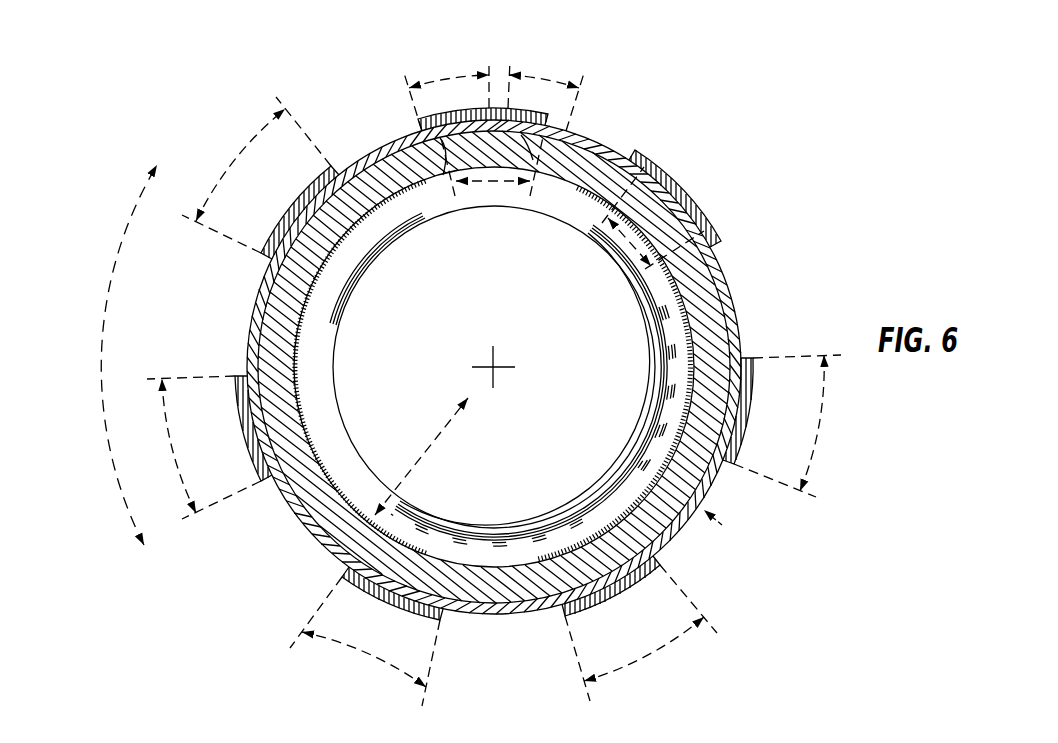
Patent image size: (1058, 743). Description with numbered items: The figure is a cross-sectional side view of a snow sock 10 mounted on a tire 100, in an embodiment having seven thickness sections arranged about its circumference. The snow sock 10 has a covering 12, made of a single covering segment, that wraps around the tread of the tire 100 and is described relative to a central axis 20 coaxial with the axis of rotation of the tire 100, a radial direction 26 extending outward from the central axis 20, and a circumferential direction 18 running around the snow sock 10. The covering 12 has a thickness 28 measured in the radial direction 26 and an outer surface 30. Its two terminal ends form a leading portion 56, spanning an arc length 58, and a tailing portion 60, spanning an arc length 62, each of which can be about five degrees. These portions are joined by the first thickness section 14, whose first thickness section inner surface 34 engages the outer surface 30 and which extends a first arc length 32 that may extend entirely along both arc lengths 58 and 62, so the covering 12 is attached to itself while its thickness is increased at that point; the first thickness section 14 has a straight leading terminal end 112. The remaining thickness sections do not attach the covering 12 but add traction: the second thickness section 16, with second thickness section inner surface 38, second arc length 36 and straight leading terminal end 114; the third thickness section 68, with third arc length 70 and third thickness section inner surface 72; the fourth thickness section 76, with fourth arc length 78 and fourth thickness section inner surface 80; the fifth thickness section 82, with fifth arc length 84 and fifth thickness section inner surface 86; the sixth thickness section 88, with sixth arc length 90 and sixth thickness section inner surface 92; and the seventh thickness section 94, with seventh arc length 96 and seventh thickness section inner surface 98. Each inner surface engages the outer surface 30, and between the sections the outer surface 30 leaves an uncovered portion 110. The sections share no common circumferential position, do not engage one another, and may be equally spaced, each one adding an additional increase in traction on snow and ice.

The snow sock 10 is at (725, 272).
The covering 12 is at (255, 306).
The first thickness section 14 is at (544, 120).
The second thickness section 16 is at (662, 170).
The circumferential direction 18 is at (106, 302).
The central axis 20 is at (497, 363).
The radial direction 26 is at (428, 448).
The thickness 28 is at (722, 525).
The outer surface 30 is at (744, 327).
The first arc length 32 is at (500, 207).
The first thickness section inner surface 34 is at (440, 138).
The second arc length 36 is at (628, 240).
The second thickness section inner surface 38 is at (680, 213).
The leading portion 56 is at (453, 130).
The arc length 58 is at (452, 76).
The tailing portion 60 is at (533, 160).
The arc length 62 is at (548, 77).
The third thickness section 68 is at (751, 370).
The third arc length 70 is at (810, 447).
The third thickness section inner surface 72 is at (735, 412).
The fourth thickness section 76 is at (654, 572).
The fourth arc length 78 is at (625, 665).
The fourth thickness section inner surface 80 is at (602, 588).
The fifth thickness section 82 is at (414, 610).
The fifth arc length 84 is at (340, 654).
The fifth thickness section inner surface 86 is at (378, 586).
The sixth thickness section 88 is at (258, 470).
The sixth arc length 90 is at (166, 435).
The sixth thickness section inner surface 92 is at (258, 428).
The seventh thickness section 94 is at (272, 230).
The seventh arc length 96 is at (265, 145).
The seventh thickness section inner surface 98 is at (318, 198).
The tire 100 is at (653, 413).
The uncovered portion 110 is at (620, 150).
The leading terminal end 112 is at (554, 118).
The leading terminal end 114 is at (730, 234).